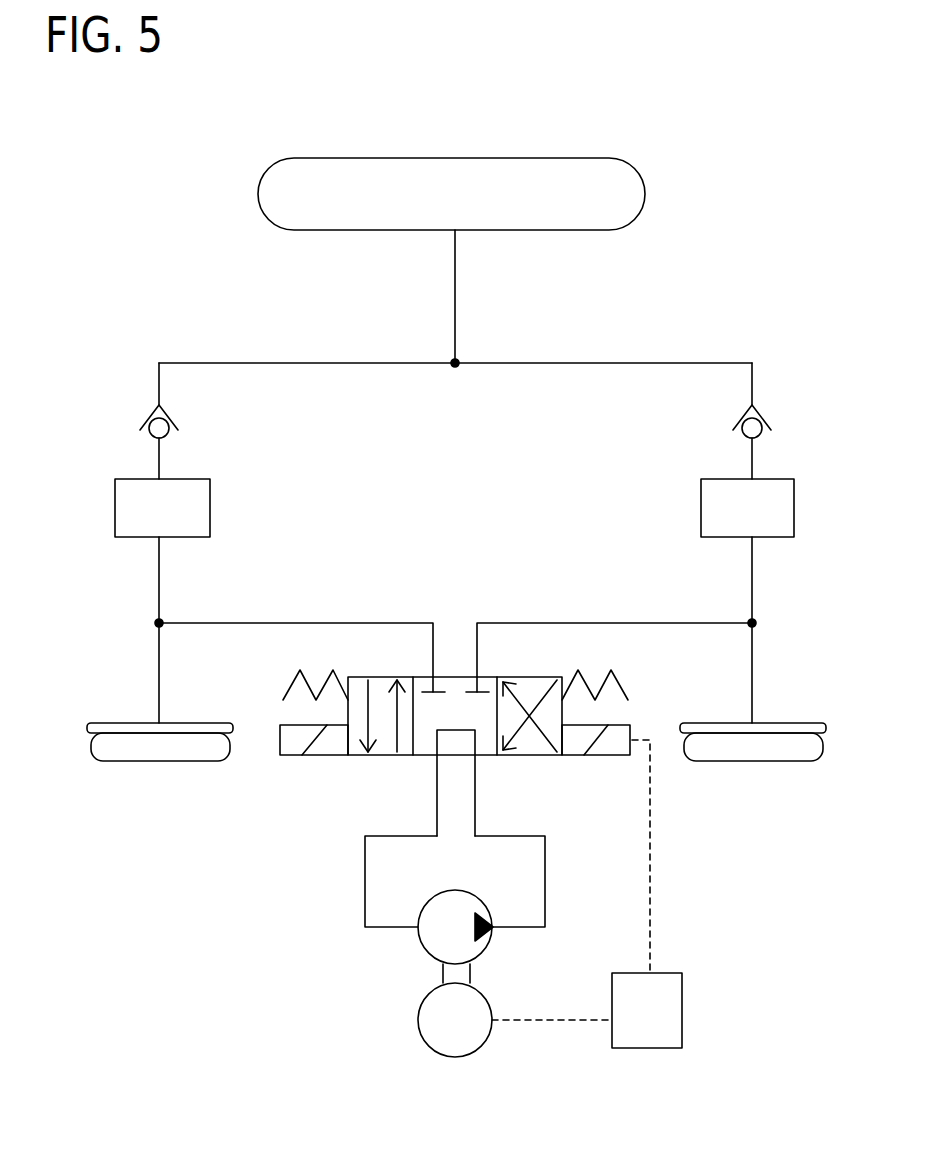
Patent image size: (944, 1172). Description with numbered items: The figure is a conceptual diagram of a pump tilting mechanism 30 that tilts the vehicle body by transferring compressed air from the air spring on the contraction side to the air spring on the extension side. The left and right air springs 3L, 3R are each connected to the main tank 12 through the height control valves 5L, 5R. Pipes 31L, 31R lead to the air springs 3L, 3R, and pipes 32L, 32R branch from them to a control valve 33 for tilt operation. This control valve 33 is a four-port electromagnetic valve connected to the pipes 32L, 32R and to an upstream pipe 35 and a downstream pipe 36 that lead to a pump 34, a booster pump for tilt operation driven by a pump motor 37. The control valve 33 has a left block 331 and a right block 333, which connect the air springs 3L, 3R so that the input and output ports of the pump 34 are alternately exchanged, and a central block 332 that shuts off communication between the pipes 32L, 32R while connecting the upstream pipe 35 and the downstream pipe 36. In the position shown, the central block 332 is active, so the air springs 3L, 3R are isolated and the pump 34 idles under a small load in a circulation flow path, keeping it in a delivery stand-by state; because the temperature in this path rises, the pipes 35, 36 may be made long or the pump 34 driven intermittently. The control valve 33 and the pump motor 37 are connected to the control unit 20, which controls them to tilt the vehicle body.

The main tank 12 is at (424, 172).
The pump tilting mechanism 30 is at (485, 556).
The height control valve 5L is at (190, 490).
The height control valve 5R is at (778, 490).
The pipe 31L is at (158, 580).
The pipe 31R is at (755, 578).
The pipe 32L is at (300, 622).
The pipe 32R is at (624, 622).
The control valve 33 is at (556, 680).
The left block 331 is at (368, 757).
The central block 332 is at (425, 750).
The right block 333 is at (528, 745).
The air spring 3L is at (160, 748).
The air spring 3R is at (752, 748).
The pump 34 is at (477, 948).
The upstream pipe 35 is at (365, 890).
The downstream pipe 36 is at (545, 885).
The pump motor 37 is at (475, 1040).
The control unit 20 is at (682, 1028).